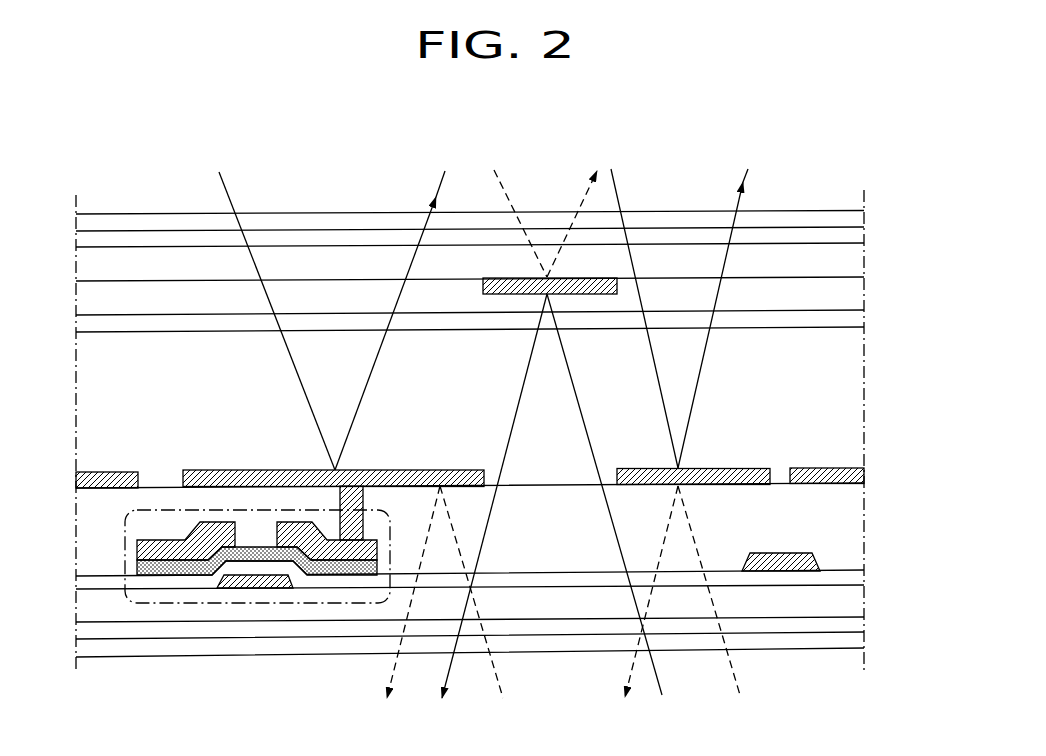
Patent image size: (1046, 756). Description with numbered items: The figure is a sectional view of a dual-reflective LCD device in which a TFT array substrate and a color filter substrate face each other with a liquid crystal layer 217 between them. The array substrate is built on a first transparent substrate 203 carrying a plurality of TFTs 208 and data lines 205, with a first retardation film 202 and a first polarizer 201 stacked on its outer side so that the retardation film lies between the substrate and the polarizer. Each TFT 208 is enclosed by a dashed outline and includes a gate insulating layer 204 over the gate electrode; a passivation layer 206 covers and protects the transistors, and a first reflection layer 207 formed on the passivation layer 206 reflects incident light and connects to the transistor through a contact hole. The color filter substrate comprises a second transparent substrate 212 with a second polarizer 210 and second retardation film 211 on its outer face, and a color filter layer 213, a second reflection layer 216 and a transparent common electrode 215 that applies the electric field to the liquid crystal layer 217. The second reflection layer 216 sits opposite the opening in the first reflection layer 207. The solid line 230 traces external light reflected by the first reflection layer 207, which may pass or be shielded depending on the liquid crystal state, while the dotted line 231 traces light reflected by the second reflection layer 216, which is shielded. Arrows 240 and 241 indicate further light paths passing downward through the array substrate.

The first polarizer 201 is at (858, 636).
The first retardation film 202 is at (858, 619).
The first transparent substrate 203 is at (858, 588).
The gate insulating layer 204 is at (858, 573).
The data line 205 is at (779, 573).
The passivation layer 206 is at (858, 528).
The first reflection layer 207 is at (858, 473).
The thin film transistor 208 is at (257, 604).
The second polarizer 210 is at (858, 212).
The second retardation film 211 is at (860, 229).
The second transparent substrate 212 is at (858, 263).
The color filter layer 213 is at (858, 295).
The common electrode 215 is at (858, 314).
The second reflection layer 216 is at (588, 295).
The liquid crystal layer 217 is at (858, 433).
The solid line 230 is at (228, 192).
The dotted line 231 is at (505, 190).
The transmitted light ray 240 is at (654, 675).
The transmitted light ray 241 is at (732, 675).